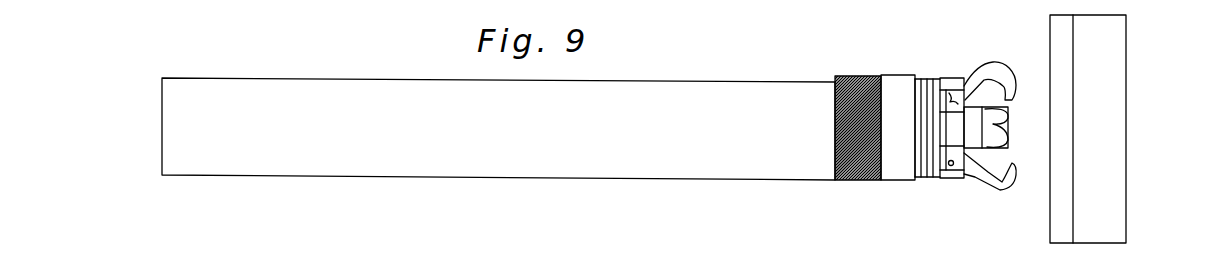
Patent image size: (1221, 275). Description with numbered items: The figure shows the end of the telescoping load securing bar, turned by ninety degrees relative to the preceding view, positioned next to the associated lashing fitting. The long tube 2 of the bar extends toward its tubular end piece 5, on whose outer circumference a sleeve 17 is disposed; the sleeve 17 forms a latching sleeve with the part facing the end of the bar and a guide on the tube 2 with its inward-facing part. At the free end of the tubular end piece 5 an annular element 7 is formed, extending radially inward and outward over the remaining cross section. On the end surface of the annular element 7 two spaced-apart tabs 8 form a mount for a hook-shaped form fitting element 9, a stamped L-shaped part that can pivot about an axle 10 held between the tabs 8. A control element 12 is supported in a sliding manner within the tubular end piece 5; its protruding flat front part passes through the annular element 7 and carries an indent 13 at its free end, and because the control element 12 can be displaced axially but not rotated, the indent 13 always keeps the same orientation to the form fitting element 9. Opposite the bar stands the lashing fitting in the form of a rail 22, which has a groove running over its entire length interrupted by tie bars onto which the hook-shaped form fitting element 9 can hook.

The tube 2 is at (678, 88).
The tubular end piece 5 is at (998, 188).
The annular element 7 is at (937, 176).
The tabs 8 is at (963, 86).
The hook-shaped form fitting element 9 is at (997, 62).
The axle 10 is at (956, 96).
The control element 12 is at (1008, 103).
The indent 13 is at (1022, 122).
The sleeve 17 is at (886, 176).
The rail 22 is at (1126, 80).